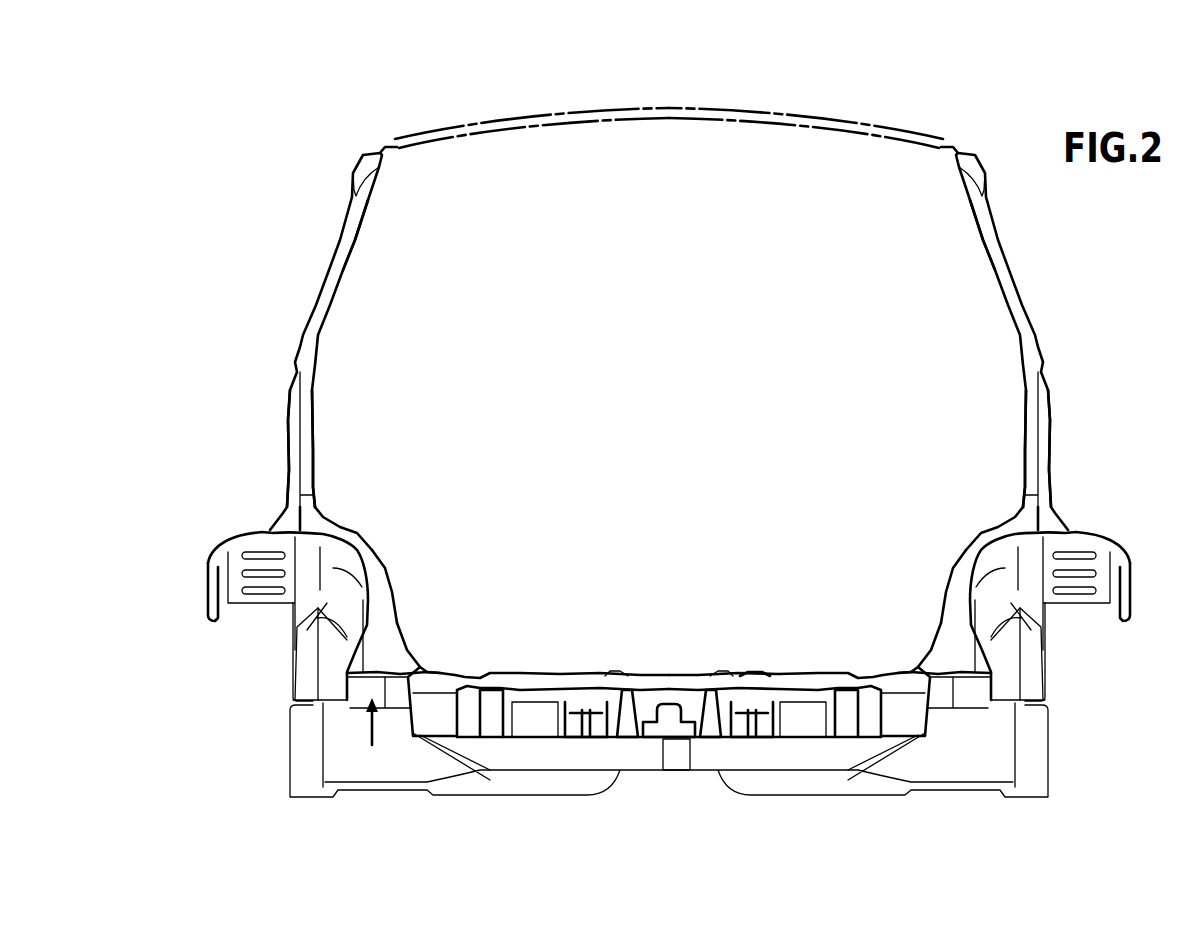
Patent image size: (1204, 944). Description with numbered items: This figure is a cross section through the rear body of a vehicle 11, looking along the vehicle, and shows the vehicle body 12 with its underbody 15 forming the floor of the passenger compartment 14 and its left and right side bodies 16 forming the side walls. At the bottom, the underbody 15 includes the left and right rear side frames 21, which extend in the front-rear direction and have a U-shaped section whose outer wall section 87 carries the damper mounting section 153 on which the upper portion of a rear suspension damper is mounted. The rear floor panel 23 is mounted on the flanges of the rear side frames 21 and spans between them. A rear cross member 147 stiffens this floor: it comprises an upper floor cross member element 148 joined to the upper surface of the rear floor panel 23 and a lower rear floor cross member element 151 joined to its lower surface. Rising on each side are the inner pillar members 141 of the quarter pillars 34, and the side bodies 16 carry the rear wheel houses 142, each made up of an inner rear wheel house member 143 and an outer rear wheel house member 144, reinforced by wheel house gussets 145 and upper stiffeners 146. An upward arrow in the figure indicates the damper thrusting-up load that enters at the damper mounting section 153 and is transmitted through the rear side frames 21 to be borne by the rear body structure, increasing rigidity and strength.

The vehicle 11 is at (294, 184).
The vehicle body 12 is at (668, 541).
The passenger compartment 14 is at (696, 333).
The underbody 15 is at (731, 628).
The side body 16 is at (292, 330).
The rear side frame 21 is at (430, 752).
The rear floor panel 23 is at (776, 676).
The quarter pillar 34 is at (336, 252).
The outer wall section 87 is at (410, 713).
The inner pillar member 141 is at (315, 447).
The rear wheel house 142 is at (243, 533).
The inner rear wheel house member 143 is at (352, 538).
The outer rear wheel house member 144 is at (216, 553).
The wheel house gusset 145 is at (400, 648).
The upper stiffener 146 is at (378, 548).
The rear cross member 147 is at (626, 659).
The upper floor cross member element 148 is at (652, 674).
The lower rear floor cross member element 151 is at (647, 703).
The damper mounting section 153 is at (377, 678).